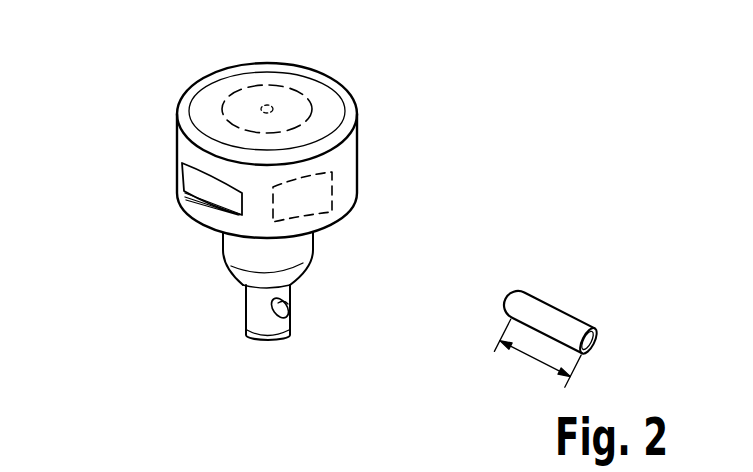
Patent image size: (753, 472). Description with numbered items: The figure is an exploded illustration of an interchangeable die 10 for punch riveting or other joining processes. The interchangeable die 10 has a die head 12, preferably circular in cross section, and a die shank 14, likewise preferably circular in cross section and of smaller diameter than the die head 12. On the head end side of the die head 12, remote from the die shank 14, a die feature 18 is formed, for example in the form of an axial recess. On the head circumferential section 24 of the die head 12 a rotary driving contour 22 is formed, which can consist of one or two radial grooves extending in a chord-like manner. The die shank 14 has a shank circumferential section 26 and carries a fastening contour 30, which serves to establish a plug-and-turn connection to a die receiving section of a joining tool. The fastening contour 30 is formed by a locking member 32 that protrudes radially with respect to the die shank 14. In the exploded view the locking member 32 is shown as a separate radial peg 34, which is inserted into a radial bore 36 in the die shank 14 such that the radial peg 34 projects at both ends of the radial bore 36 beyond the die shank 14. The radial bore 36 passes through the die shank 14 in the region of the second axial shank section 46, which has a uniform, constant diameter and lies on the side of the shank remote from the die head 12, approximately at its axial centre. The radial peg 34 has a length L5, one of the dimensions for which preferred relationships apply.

The interchangeable die 10 is at (521, 92).
The die head 12 is at (164, 142).
The die shank 14 is at (221, 268).
The die feature 18 is at (238, 90).
The rotary driving contour 22 is at (190, 181).
The head circumferential section 24 is at (357, 163).
The shank circumferential section 26 is at (298, 265).
The fastening contour 30 is at (569, 152).
The locking member 32 is at (617, 297).
The radial peg 34 is at (542, 308).
The radial bore 36 is at (288, 308).
The second axial shank section 46 is at (333, 193).
The length of the radial peg L5 is at (523, 362).